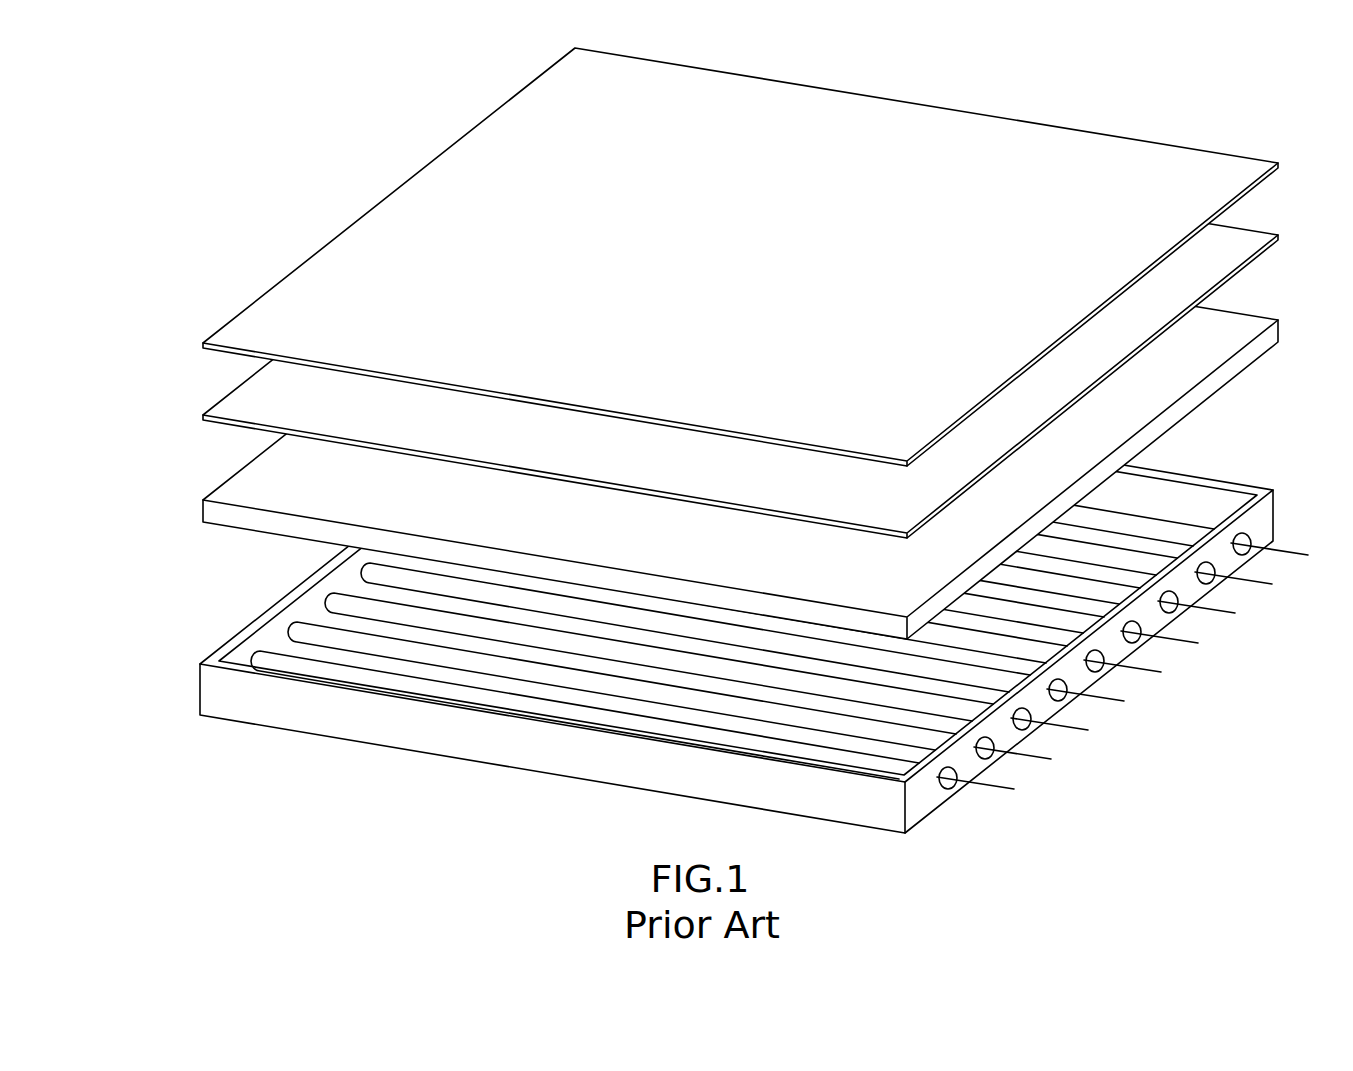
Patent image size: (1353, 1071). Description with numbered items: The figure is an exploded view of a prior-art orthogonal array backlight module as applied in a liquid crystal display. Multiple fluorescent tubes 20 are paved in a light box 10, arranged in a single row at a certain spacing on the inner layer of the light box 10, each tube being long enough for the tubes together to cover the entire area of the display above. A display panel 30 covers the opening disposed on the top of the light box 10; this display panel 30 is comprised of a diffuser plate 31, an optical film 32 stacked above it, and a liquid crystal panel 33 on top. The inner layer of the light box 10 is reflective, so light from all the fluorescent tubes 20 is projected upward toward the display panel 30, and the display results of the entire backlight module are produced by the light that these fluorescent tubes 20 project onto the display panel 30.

The light box 10 is at (478, 744).
The fluorescent tubes 20 is at (297, 635).
The display panel 30 is at (717, 343).
The diffuser plate 31 is at (1198, 405).
The optical film 32 is at (1218, 273).
The liquid crystal panel 33 is at (1163, 180).